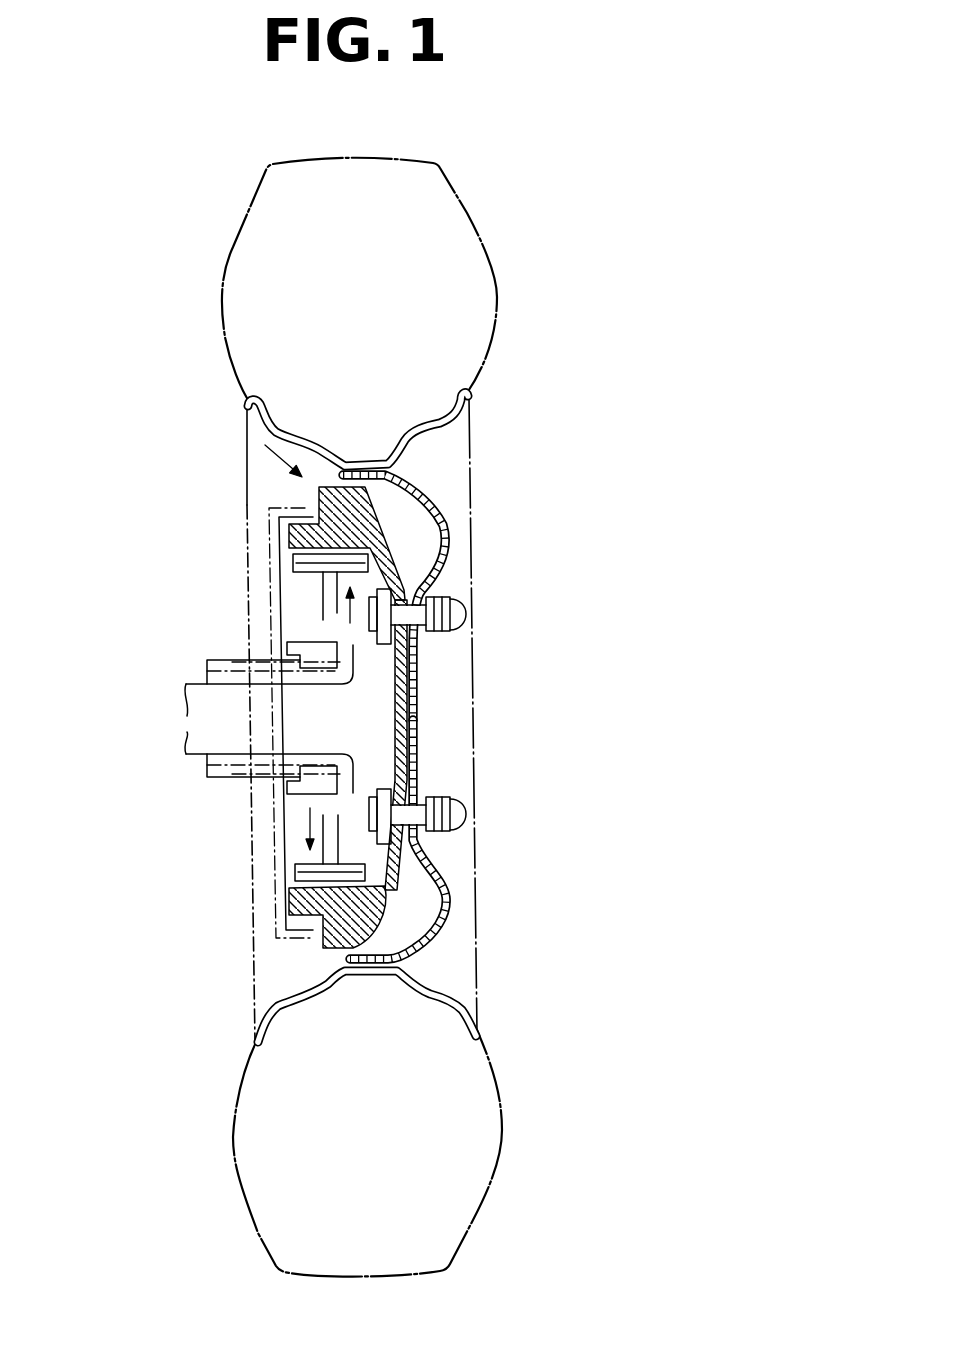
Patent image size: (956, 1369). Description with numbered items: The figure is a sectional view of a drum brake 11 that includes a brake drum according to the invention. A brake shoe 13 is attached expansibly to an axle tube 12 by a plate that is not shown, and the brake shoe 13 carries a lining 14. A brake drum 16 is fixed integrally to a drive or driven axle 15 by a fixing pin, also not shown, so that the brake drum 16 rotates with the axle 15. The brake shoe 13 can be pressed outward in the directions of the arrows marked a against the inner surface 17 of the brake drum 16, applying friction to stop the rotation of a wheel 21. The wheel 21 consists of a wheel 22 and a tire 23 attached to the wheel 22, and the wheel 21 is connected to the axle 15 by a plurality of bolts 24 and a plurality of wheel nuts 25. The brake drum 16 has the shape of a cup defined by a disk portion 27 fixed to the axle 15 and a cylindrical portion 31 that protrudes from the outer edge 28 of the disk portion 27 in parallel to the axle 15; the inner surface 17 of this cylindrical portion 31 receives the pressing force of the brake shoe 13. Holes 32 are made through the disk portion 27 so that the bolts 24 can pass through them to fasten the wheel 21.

The drum brake 11 is at (300, 462).
The axle tube 12 is at (212, 660).
The brake shoe 13 is at (318, 595).
The lining 14 is at (300, 557).
The axle 15 is at (205, 757).
The brake drum 16 is at (320, 941).
The inner surface 17 is at (292, 863).
The wheel 21 is at (450, 717).
The wheel 22 is at (440, 508).
The tire 23 is at (485, 357).
The bolts 24 is at (366, 816).
The wheel nuts 25 is at (470, 598).
The disk portion 27 is at (405, 784).
The outer edge 28 is at (447, 897).
The cylindrical portion 31 is at (320, 941).
The holes 32 is at (440, 617).